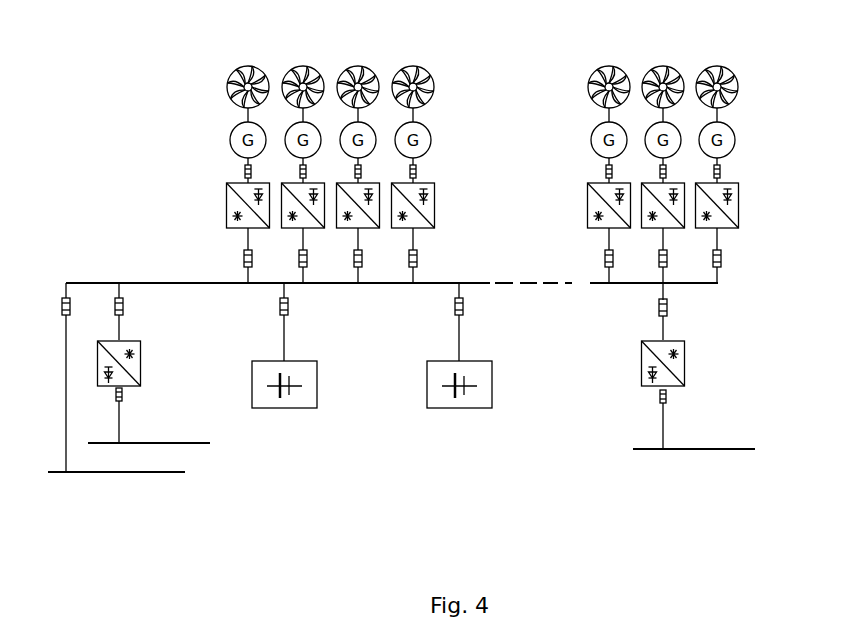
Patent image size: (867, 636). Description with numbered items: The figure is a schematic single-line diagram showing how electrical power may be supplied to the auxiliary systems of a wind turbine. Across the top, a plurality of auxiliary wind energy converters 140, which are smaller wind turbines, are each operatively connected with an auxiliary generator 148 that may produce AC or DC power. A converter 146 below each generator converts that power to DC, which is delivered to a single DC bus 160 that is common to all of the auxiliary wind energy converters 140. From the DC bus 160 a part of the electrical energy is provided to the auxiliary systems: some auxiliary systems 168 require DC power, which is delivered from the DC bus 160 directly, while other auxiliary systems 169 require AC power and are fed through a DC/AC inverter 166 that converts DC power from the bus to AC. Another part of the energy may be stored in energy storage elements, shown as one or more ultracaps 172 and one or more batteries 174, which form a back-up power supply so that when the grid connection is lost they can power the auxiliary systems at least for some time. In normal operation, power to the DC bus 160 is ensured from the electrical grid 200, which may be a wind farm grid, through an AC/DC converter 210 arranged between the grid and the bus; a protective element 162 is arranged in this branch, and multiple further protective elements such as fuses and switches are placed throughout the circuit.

The auxiliary wind energy converter 140 is at (610, 67).
The auxiliary generator 148 is at (736, 139).
The converter 146 is at (740, 200).
The DC bus 160 is at (87, 278).
The circuit breaker 162 is at (668, 305).
The DC/AC inverter 166 is at (143, 362).
The auxiliary systems 168 is at (125, 473).
The auxiliary systems 169 is at (195, 445).
The ultracaps 172 is at (283, 412).
The batteries 174 is at (457, 412).
The electrical grid 200 is at (697, 452).
The AC/DC converter 210 is at (687, 362).